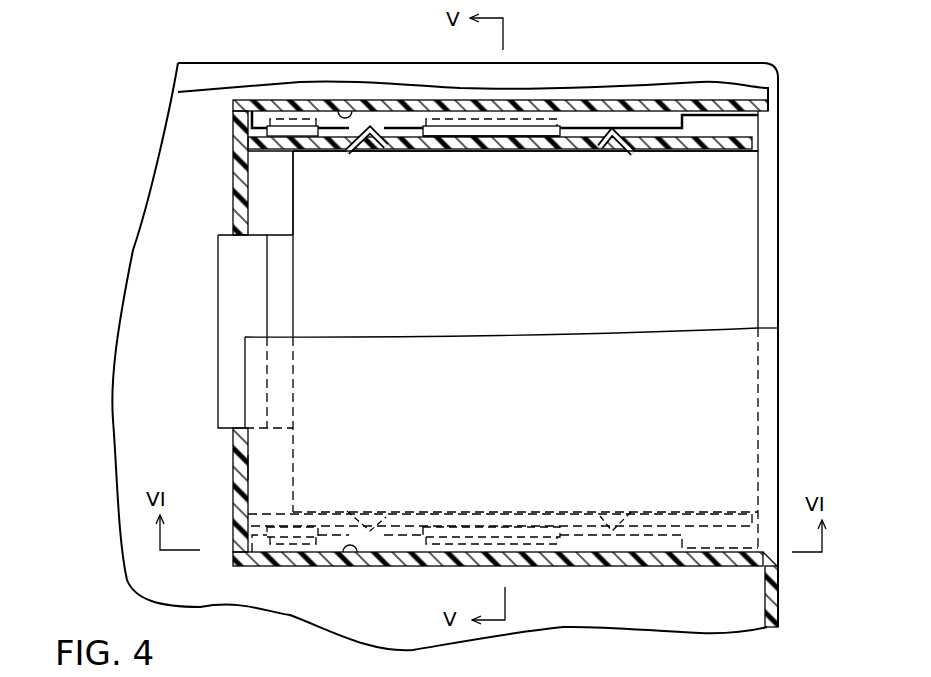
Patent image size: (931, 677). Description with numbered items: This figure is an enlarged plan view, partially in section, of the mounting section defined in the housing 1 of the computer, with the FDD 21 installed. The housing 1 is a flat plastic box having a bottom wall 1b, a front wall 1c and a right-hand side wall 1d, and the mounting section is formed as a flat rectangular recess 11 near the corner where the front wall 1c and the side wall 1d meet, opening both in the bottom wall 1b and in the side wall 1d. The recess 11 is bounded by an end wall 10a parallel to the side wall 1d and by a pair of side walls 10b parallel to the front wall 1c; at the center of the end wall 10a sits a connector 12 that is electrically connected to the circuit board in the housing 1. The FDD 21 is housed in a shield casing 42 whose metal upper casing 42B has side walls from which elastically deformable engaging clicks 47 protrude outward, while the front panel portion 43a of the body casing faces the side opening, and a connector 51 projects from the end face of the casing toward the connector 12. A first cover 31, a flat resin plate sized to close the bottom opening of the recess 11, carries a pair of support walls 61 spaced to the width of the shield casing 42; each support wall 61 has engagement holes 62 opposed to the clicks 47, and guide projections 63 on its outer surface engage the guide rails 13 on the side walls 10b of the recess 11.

The housing 1 is at (600, 60).
The bottom wall 1b is at (212, 63).
The front wall 1c is at (277, 63).
The right-hand side wall 1d is at (778, 606).
The end wall 10a is at (240, 470).
The side walls 10b is at (345, 111).
The recess 11 is at (233, 193).
The connector 12 is at (218, 289).
The guide rails 13 is at (570, 120).
The FDD 21 is at (705, 175).
The first cover 31 is at (742, 401).
The shield casing 42 is at (742, 271).
The upper casing 42B is at (745, 316).
The front panel portion 43a is at (772, 213).
The engaging clicks 47 is at (372, 150).
The connector 51 is at (293, 289).
The support walls 61 is at (462, 140).
The engagement holes 62 is at (396, 137).
The guide projections 63 is at (300, 137).